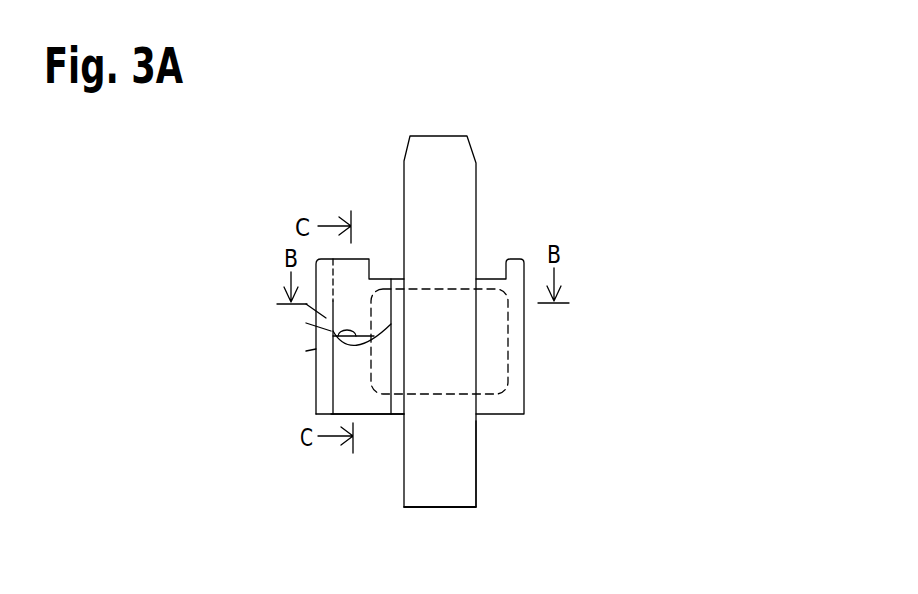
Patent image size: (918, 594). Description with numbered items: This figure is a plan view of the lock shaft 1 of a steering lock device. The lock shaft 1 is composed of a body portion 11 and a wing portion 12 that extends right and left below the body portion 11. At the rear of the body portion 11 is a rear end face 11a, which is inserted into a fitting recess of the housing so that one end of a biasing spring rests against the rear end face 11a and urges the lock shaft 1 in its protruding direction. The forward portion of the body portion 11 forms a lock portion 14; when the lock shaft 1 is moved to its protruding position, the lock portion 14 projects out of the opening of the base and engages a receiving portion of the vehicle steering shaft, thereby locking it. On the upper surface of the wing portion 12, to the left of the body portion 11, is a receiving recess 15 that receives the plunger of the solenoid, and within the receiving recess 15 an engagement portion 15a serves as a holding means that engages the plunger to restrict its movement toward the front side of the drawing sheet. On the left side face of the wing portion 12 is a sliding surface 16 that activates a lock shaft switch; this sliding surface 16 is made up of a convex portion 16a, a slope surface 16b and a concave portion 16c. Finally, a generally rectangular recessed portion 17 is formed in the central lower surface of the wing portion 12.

The lock shaft 1 is at (500, 152).
The body portion 11 is at (475, 457).
The rear end face 11a is at (433, 507).
The wing portion 12 is at (372, 413).
The lock portion 14 is at (440, 142).
The receiving recess 15 is at (363, 290).
The engagement portion 15a is at (337, 331).
The sliding surface 16 is at (236, 334).
The convex portion 16a is at (315, 348).
The slope surface 16b is at (330, 330).
The concave portion 16c is at (325, 317).
The recessed portion 17 is at (500, 332).